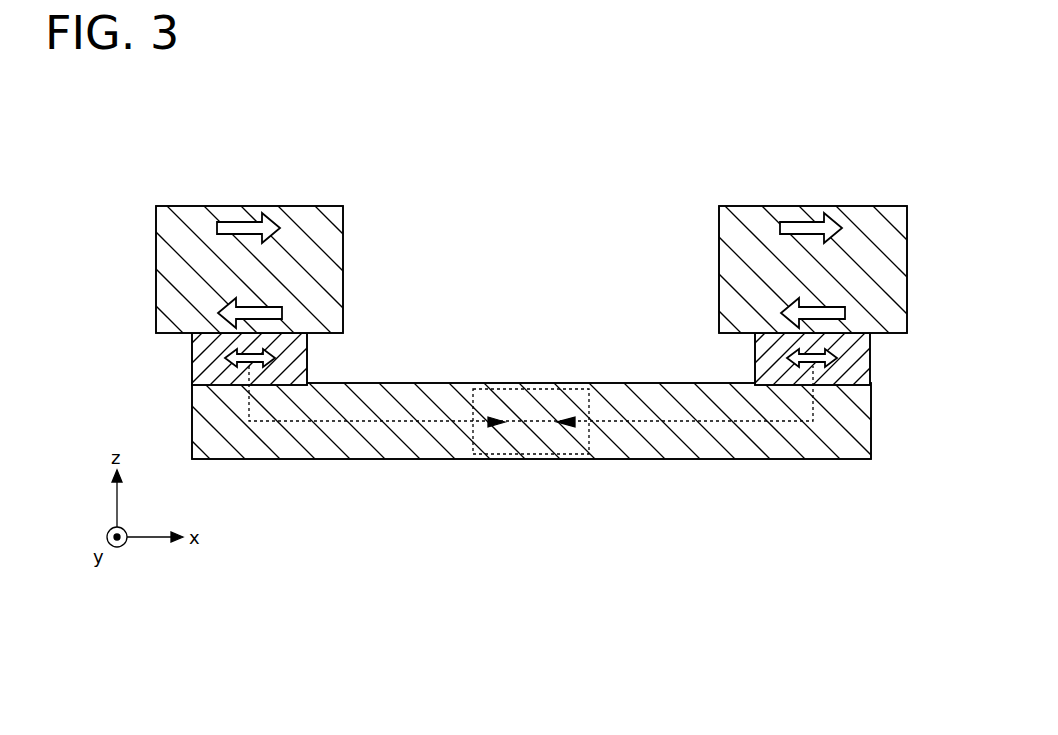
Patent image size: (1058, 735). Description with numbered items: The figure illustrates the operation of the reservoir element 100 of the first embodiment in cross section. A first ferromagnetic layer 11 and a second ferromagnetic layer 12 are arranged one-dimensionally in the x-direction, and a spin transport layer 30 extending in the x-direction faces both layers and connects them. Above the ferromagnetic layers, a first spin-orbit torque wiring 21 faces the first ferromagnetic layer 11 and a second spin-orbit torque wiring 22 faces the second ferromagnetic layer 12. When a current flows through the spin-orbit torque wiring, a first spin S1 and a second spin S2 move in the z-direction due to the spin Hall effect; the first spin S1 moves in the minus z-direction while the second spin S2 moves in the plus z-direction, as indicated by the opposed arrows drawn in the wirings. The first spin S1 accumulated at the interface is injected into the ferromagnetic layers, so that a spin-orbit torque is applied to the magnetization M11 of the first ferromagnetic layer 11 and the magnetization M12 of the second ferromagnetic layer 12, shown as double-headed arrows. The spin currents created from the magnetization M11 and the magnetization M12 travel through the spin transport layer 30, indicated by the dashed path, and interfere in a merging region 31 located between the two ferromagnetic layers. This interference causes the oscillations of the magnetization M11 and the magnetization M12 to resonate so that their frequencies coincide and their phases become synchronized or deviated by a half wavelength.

The reservoir element 100 is at (655, 117).
The spin transport layer 30 is at (848, 420).
The merging region 31 is at (543, 388).
The first ferromagnetic layer 11 is at (292, 358).
The second ferromagnetic layer 12 is at (770, 353).
The first spin-orbit torque wiring 21 is at (185, 205).
The second spin-orbit torque wiring 22 is at (748, 205).
The first spin S1 is at (268, 313).
The second spin S2 is at (267, 228).
The magnetization of the first ferromagnetic layer M11 is at (240, 357).
The magnetization of the second ferromagnetic layer M12 is at (834, 358).